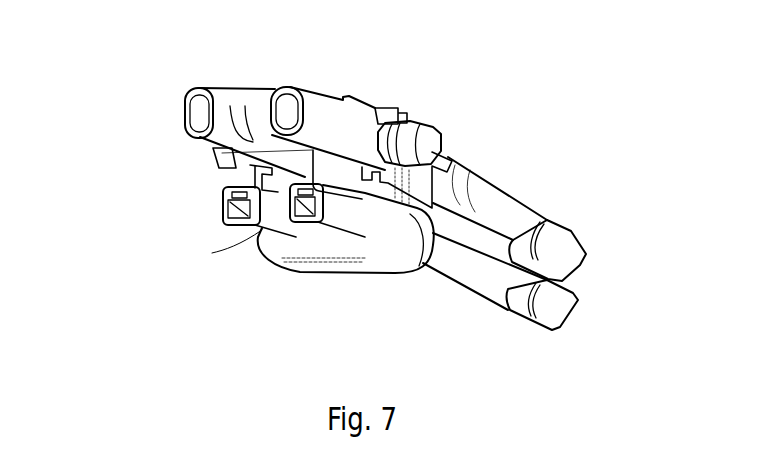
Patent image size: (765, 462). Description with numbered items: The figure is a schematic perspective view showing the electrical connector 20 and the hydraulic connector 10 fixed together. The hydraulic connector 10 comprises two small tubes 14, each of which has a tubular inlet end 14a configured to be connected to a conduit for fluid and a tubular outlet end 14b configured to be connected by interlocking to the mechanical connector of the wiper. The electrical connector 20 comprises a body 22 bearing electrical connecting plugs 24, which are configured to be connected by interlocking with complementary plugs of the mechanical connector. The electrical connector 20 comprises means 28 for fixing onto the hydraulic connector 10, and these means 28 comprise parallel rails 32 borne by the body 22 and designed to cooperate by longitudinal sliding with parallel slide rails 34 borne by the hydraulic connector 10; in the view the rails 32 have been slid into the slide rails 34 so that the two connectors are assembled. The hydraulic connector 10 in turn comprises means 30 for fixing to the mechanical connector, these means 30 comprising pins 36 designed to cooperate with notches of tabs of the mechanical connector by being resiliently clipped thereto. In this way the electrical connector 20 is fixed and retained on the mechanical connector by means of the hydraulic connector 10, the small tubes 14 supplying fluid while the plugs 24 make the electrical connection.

The hydraulic connector 10 is at (362, 99).
The small tubes 14 is at (488, 252).
The tubular inlet end 14a is at (558, 307).
The tubular outlet end 14b is at (273, 93).
The electrical connector 20 is at (346, 278).
The body 22 is at (367, 274).
The electrical connecting plugs 24 is at (212, 253).
The means for fixing 28 is at (302, 157).
The parallel rails 32 is at (428, 127).
The means for fixing 30 is at (279, 106).
The pins 36 is at (400, 116).
The parallel slide rails 34 is at (437, 181).